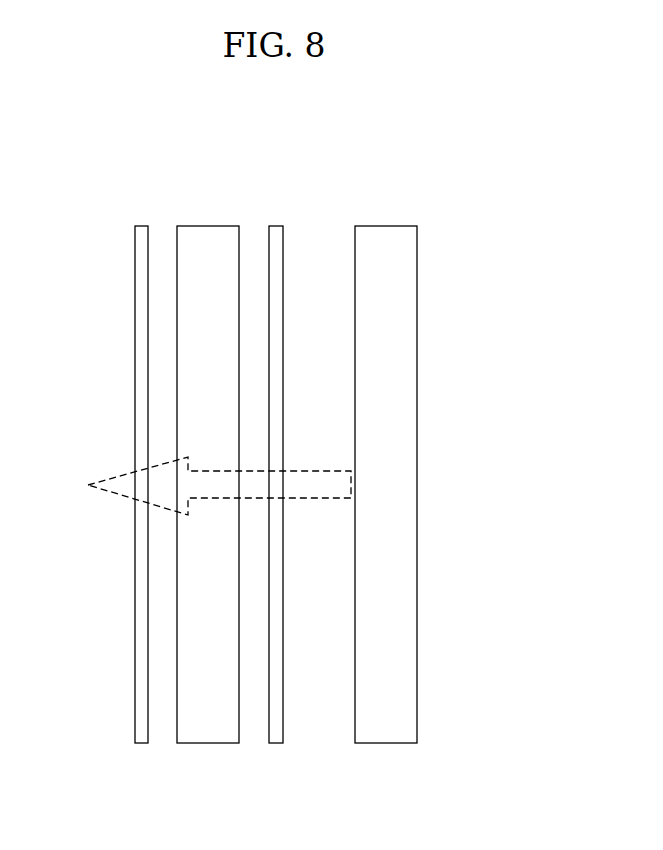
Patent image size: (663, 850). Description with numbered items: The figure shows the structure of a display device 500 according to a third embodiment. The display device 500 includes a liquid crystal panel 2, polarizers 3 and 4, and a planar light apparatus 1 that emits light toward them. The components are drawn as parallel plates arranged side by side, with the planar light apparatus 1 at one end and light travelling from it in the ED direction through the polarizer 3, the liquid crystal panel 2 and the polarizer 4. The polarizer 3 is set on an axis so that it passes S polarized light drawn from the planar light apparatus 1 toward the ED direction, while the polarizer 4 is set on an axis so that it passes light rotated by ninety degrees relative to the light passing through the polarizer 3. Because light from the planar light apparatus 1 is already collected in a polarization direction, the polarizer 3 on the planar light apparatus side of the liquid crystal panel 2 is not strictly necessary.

The planar light apparatus 1 is at (383, 744).
The liquid crystal panel 2 is at (204, 744).
The polarizer 3 is at (274, 744).
The polarizer 4 is at (138, 744).
The display device 500 is at (458, 350).
The ED direction ED is at (201, 486).